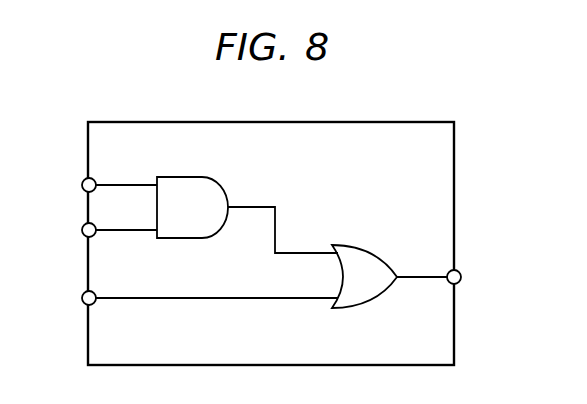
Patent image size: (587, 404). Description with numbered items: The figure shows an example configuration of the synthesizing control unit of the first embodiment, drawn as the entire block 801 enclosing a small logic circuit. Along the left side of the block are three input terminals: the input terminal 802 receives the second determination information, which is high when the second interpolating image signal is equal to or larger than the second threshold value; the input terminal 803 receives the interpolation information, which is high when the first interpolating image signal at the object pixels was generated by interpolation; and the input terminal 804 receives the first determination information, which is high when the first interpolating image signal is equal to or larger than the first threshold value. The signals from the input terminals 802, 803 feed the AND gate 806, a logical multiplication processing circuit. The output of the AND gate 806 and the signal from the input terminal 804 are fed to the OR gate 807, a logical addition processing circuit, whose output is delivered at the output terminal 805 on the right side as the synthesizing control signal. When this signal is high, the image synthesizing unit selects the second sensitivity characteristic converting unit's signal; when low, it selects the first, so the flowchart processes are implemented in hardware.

The entire block of the synthesizing control unit 801 is at (255, 120).
The input terminal 802 is at (82, 185).
The input terminal 803 is at (82, 230).
The input terminal 804 is at (82, 298).
The output terminal 805 is at (462, 277).
The AND gate 806 is at (180, 177).
The OR gate 807 is at (355, 245).